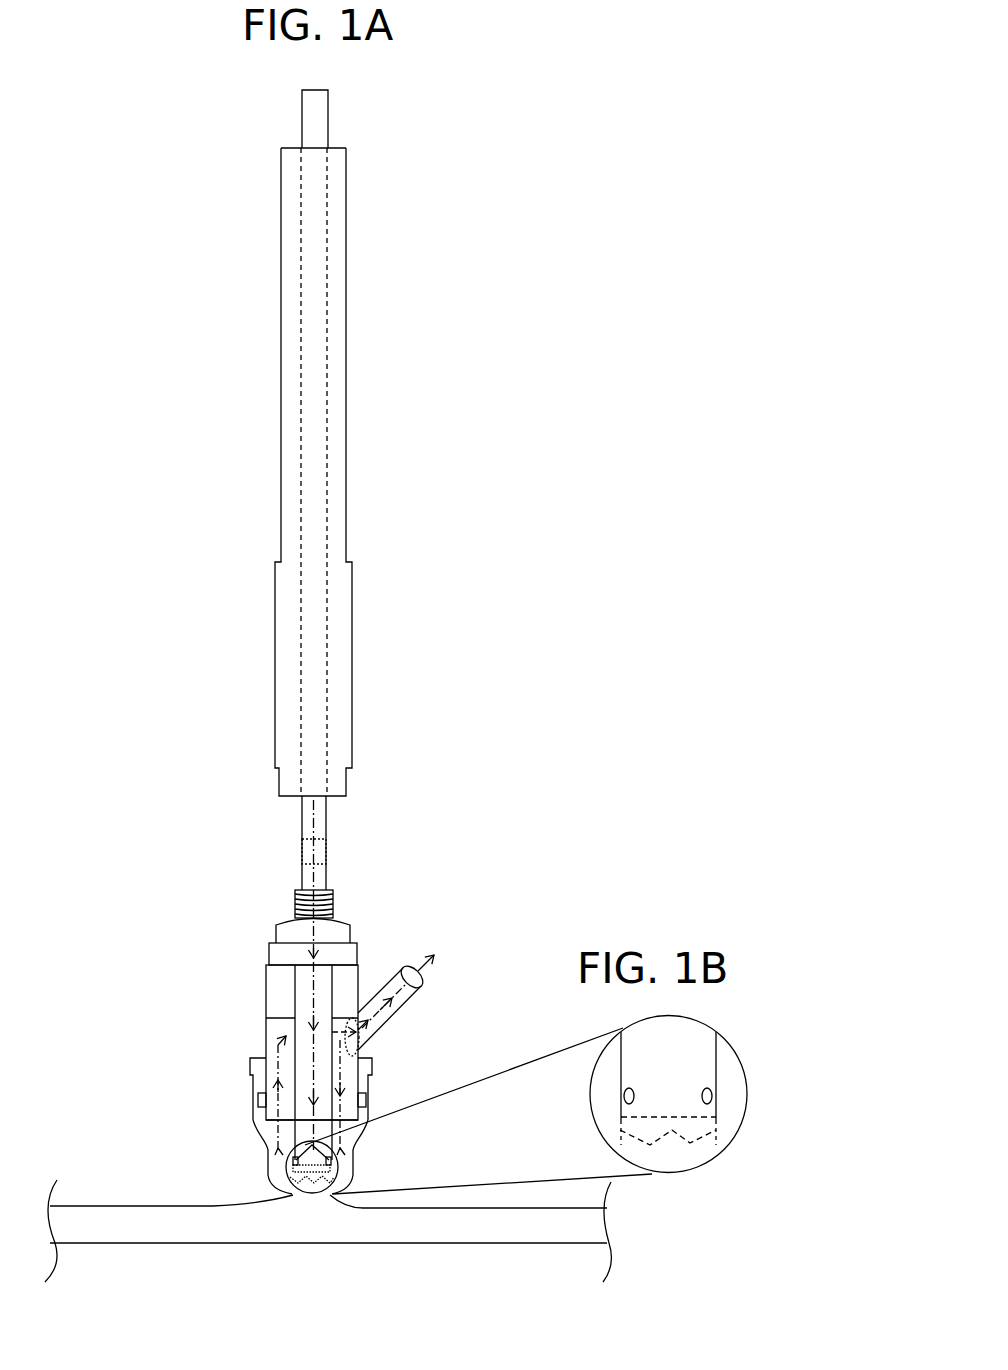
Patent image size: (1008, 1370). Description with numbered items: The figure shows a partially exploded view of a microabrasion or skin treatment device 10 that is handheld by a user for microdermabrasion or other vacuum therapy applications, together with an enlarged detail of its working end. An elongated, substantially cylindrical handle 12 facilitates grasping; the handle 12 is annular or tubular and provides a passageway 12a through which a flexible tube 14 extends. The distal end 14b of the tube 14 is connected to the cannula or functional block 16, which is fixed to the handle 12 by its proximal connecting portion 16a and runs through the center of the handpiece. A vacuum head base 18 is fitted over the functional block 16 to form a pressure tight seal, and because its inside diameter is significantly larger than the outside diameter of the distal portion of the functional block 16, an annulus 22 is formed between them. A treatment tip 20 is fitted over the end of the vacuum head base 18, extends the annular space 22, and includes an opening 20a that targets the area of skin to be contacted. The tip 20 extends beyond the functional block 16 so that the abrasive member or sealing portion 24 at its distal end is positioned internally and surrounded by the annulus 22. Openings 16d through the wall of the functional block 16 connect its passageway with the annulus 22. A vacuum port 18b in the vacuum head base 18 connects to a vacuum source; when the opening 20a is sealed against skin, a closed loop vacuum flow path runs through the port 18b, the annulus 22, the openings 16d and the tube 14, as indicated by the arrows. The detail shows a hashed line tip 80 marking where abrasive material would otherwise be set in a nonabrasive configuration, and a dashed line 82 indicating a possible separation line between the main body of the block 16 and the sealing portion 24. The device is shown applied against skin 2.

In FIG. 1A, the workpiece 2 is at (307, 1193).
In FIG. 1A, the microabrasion or skin treatment device 10 is at (464, 608).
In FIG. 1A, the handle 12 is at (347, 432).
In FIG. 1A, the passageway 12a is at (331, 146).
In FIG. 1A, the tube 14 is at (301, 137).
In FIG. 1A, the distal end of tube 14b is at (328, 852).
In FIG. 1A, the cannula (functional block) 16 is at (352, 927).
In FIG. 1A, the threaded portion 16a is at (333, 900).
In FIG. 1B, the openings 16d is at (621, 1093).
In FIG. 1A, the vacuum head base 18 is at (266, 1038).
In FIG. 1A, the vacuum port 18b is at (418, 990).
In FIG. 1A, the treatment tip 20 is at (355, 1142).
In FIG. 1A, the opening 20a is at (292, 1195).
In FIG. 1A, the annulus 22 is at (270, 1140).
In FIG. 1A, the abrasive member (sealing portion) 24 is at (312, 1164).
In FIG. 1B, the abrasive member (sealing portion) 24 is at (690, 1128).
In FIG. 1B, the hashed line tip 80 is at (697, 1147).
In FIG. 1B, the dashed line 82 is at (688, 1113).